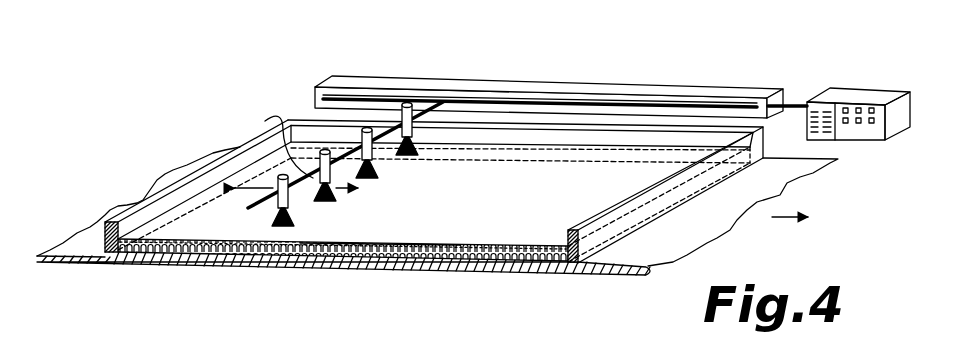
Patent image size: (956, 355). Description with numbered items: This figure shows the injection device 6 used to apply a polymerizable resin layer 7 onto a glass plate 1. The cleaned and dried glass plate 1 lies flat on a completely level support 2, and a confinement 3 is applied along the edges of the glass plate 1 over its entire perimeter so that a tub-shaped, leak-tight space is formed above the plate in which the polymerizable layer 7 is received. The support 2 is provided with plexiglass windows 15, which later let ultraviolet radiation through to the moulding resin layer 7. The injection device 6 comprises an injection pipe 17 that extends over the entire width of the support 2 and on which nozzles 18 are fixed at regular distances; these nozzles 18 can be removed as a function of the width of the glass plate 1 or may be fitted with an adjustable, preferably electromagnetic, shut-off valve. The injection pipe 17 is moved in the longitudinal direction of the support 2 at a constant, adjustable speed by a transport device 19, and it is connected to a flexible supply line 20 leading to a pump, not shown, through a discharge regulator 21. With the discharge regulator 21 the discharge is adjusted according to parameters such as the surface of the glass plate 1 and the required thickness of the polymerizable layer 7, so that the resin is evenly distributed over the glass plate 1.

The glass plate 1 is at (237, 266).
The support 2 is at (52, 259).
The confinement 3 is at (131, 208).
The injection device 6 is at (458, 67).
The polymerizable layer 7 is at (458, 244).
The plexiglass windows 15 is at (493, 268).
The injection pipe 17 is at (440, 121).
The nozzles 18 is at (308, 192).
The transport device 19 is at (588, 88).
The flexible supply line 20 is at (790, 100).
The discharge regulator 21 is at (866, 141).